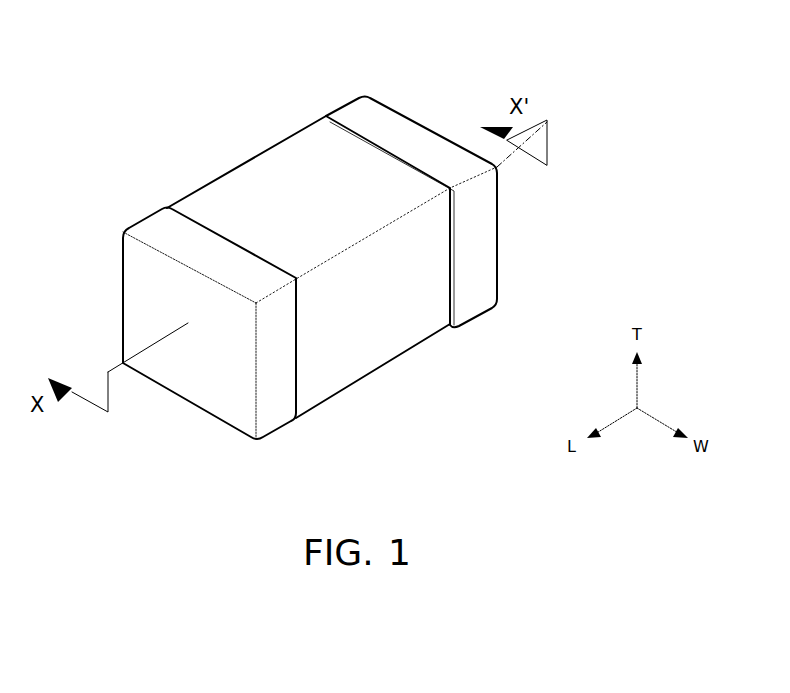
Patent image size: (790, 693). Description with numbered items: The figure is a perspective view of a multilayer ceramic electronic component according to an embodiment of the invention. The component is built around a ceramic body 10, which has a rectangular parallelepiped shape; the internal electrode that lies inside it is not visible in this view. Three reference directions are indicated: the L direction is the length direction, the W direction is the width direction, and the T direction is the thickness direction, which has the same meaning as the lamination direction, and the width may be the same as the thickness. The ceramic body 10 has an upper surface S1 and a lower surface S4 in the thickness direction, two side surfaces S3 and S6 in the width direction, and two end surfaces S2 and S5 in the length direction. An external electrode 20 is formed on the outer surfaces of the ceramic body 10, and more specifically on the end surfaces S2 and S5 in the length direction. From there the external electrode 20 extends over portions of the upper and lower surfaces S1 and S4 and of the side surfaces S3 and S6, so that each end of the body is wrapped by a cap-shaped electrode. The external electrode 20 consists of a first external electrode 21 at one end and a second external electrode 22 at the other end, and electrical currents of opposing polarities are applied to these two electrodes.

The ceramic body 10 is at (344, 253).
The external electrode 20 is at (378, 264).
The first external electrode 21 is at (209, 281).
The second external electrode 22 is at (424, 192).
The upper surface S1 is at (350, 180).
The end surface S2 is at (227, 396).
The side surface S3 is at (320, 369).
The lower surface S4 is at (413, 333).
The end surface S5 is at (475, 240).
The side surface S6 is at (228, 200).